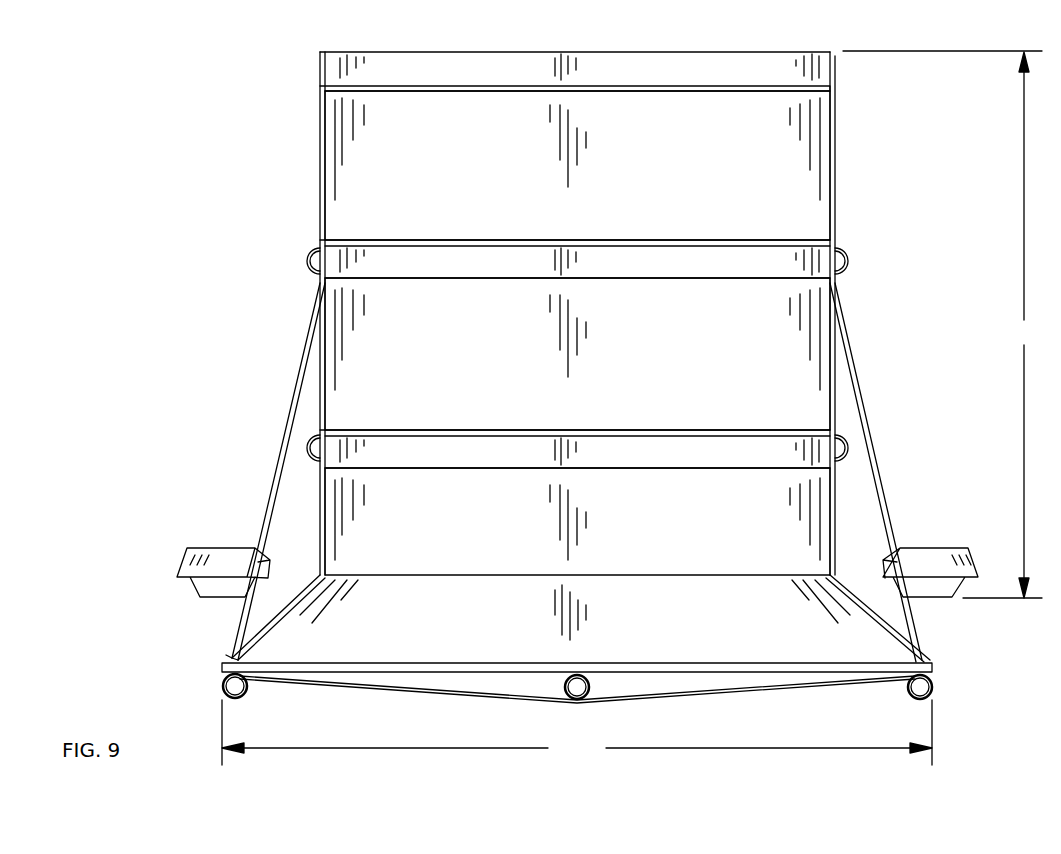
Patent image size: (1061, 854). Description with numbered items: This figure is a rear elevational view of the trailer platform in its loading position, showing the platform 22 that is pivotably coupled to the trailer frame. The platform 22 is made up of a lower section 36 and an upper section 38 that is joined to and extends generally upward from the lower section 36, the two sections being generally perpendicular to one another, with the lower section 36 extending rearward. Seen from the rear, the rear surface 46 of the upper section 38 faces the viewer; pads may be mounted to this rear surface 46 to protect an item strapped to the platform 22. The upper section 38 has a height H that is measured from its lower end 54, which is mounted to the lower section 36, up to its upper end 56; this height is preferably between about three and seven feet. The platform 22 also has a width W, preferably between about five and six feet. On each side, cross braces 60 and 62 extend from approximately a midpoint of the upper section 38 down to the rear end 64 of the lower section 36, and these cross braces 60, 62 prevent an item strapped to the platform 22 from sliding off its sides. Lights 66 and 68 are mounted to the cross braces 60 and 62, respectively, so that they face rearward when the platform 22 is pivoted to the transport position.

The platform 22 is at (312, 230).
The lower section 36 is at (873, 650).
The upper section 38 is at (627, 105).
The rear surface 46 is at (470, 172).
The lower end 54 is at (752, 572).
The upper end 56 is at (766, 50).
The cross brace 60 is at (268, 470).
The cross brace 62 is at (876, 448).
The rear end 64 is at (232, 655).
The light 66 is at (212, 553).
The light 68 is at (930, 555).